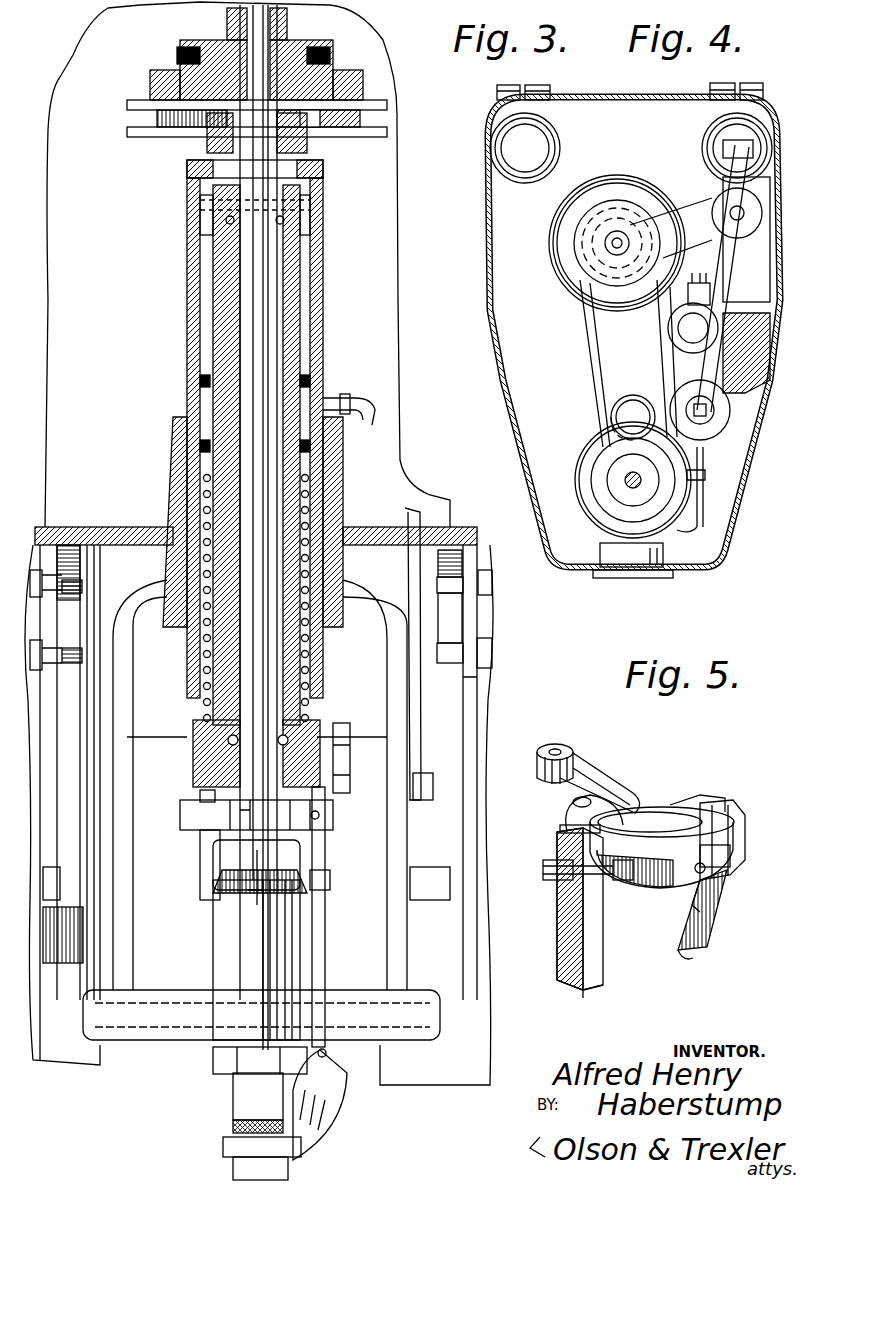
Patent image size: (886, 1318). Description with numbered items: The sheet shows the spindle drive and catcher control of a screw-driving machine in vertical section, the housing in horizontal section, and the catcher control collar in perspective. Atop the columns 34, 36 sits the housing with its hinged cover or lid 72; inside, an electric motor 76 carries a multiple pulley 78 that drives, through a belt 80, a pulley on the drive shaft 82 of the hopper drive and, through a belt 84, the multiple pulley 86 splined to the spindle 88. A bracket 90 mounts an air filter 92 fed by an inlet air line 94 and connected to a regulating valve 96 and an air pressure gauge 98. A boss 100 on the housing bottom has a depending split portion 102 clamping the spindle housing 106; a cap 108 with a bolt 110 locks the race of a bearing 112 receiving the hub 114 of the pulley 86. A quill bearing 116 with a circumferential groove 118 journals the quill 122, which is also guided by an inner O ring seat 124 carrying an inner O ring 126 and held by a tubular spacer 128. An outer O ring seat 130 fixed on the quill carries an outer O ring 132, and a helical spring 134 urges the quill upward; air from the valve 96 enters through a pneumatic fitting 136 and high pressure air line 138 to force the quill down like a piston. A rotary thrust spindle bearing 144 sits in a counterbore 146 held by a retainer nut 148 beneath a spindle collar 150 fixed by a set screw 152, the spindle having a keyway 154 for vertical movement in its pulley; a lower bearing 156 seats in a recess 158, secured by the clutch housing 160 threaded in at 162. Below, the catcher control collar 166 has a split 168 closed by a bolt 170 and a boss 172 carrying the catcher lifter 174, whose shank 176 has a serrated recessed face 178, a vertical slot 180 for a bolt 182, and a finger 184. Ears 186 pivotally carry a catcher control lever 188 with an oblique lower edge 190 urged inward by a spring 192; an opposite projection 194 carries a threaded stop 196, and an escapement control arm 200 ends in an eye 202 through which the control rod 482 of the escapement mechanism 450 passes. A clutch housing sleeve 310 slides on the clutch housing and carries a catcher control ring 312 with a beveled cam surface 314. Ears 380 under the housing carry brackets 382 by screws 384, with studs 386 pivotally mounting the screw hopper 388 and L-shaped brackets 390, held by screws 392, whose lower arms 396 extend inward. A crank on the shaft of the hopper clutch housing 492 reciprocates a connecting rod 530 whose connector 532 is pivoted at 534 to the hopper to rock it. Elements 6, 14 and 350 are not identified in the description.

In FIG. 3, the spindle shaft 6 is at (266, 668).
In FIG. 4, the adjusting rod 14 is at (719, 481).
In FIG. 3, the column 34 is at (55, 1040).
In FIG. 4, the column 34 is at (548, 130).
In FIG. 3, the column 36 is at (425, 1065).
In FIG. 4, the column 36 is at (745, 125).
In FIG. 4, the cover or lid 72 is at (490, 280).
In FIG. 4, the electric motor 76 is at (615, 183).
In FIG. 4, the multiple pulley 78 is at (572, 240).
In FIG. 4, the belt 80 is at (687, 203).
In FIG. 4, the drive shaft 82 is at (547, 277).
In FIG. 3, the belt 84 is at (320, 62).
In FIG. 4, the belt 84 is at (580, 338).
In FIG. 3, the multiple pulley 86 is at (310, 87).
In FIG. 4, the multiple pulley 86 is at (617, 493).
In FIG. 3, the spindle 88 is at (250, 27).
In FIG. 4, the spindle 88 is at (627, 480).
In FIG. 4, the bracket 90 is at (715, 336).
In FIG. 4, the air filter 92 is at (712, 298).
In FIG. 4, the inlet air line 94 is at (722, 281).
In FIG. 4, the regulating valve 96 is at (723, 437).
In FIG. 4, the air pressure gauge 98 is at (668, 555).
In FIG. 3, the boss 100 is at (343, 458).
In FIG. 3, the depending portion 102 is at (190, 625).
In FIG. 3, the spindle housing 106 is at (320, 252).
In FIG. 3, the cap 108 is at (192, 163).
In FIG. 3, the bolt 110 is at (315, 125).
In FIG. 3, the bearing 112 is at (330, 105).
In FIG. 3, the hub 114 is at (185, 103).
In FIG. 3, the quill bearing 116 is at (325, 760).
In FIG. 3, the circumferential groove 118 is at (348, 730).
In FIG. 3, the quill 122 is at (320, 290).
In FIG. 3, the inner O ring seat 124 is at (190, 390).
In FIG. 3, the inner O ring 126 is at (320, 367).
In FIG. 3, the tubular spacer 128 is at (190, 285).
In FIG. 3, the outer O ring seat 130 is at (185, 435).
In FIG. 3, the outer O ring 132 is at (200, 447).
In FIG. 3, the helical spring 134 is at (335, 500).
In FIG. 3, the pneumatic fitting 136 is at (355, 395).
In FIG. 3, the high pressure air line 138 is at (375, 413).
In FIG. 3, the rotary thrust spindle bearing 144 is at (310, 210).
In FIG. 3, the recess or counterbore 146 is at (310, 228).
In FIG. 3, the spindle bearing retainer nut 148 is at (310, 192).
In FIG. 3, the spindle collar 150 is at (215, 153).
In FIG. 3, the set screw 152 is at (320, 170).
In FIG. 3, the elongated keyway 154 is at (270, 52).
In FIG. 3, the rotary thrust spindle bearing 156 is at (215, 732).
In FIG. 3, the recess or counterbore 158 is at (320, 745).
In FIG. 3, the clutch housing 160 is at (283, 852).
In FIG. 3, the threaded connection 162 is at (200, 763).
In FIG. 3, the catcher control collar 166 is at (240, 828).
In FIG. 5, the catcher control collar 166 is at (694, 790).
In FIG. 5, the split 168 is at (697, 800).
In FIG. 5, the bolt 170 is at (742, 822).
In FIG. 3, the boss 172 is at (205, 798).
In FIG. 5, the boss 172 is at (623, 880).
In FIG. 3, the catcher lifter 174 is at (197, 893).
In FIG. 5, the catcher lifter 174 is at (564, 990).
In FIG. 3, the shank 176 is at (205, 875).
In FIG. 5, the shank 176 is at (603, 943).
In FIG. 3, the recessed face 178 is at (235, 825).
In FIG. 5, the recessed face 178 is at (610, 890).
In FIG. 5, the vertical slot 180 is at (555, 882).
In FIG. 3, the bolt 182 is at (200, 815).
In FIG. 3, the finger 184 is at (210, 900).
In FIG. 5, the finger 184 is at (603, 976).
In FIG. 5, the ears 186 is at (733, 857).
In FIG. 3, the catcher control lever 188 is at (255, 895).
In FIG. 5, the catcher control lever 188 is at (705, 920).
In FIG. 5, the oblique lower edge 190 is at (672, 955).
In FIG. 5, the spring 192 is at (707, 888).
In FIG. 3, the boss or projection 194 is at (545, 810).
In FIG. 5, the stop 196 is at (585, 800).
In FIG. 5, the escapement control arm 200 is at (585, 765).
In FIG. 5, the eye or sleeve 202 is at (560, 744).
In FIG. 3, the clutch housing sleeve 310 is at (280, 932).
In FIG. 3, the catcher control ring 312 is at (330, 880).
In FIG. 3, the beveled cam surface 314 is at (300, 885).
In FIG. 4, the idler 350 is at (634, 395).
In FIG. 3, the ears 380 is at (70, 575).
In FIG. 3, the brackets 382 is at (70, 690).
In FIG. 3, the screws 384 is at (40, 583).
In FIG. 3, the studs or stub shafts 386 is at (60, 900).
In FIG. 3, the screw hopper 388 is at (465, 715).
In FIG. 3, the L-shaped brackets 390 is at (70, 965).
In FIG. 3, the screws or bolts 392 is at (60, 935).
In FIG. 3, the lower arms 396 is at (103, 1045).
In FIG. 3, the escapement mechanism 450 is at (352, 1125).
In FIG. 3, the control rod 482 is at (322, 958).
In FIG. 4, the hopper clutch housing 492 is at (755, 350).
In FIG. 3, the connecting rod 530 is at (425, 515).
In FIG. 3, the connector 532 is at (425, 745).
In FIG. 3, the pivotal connection 534 is at (435, 782).